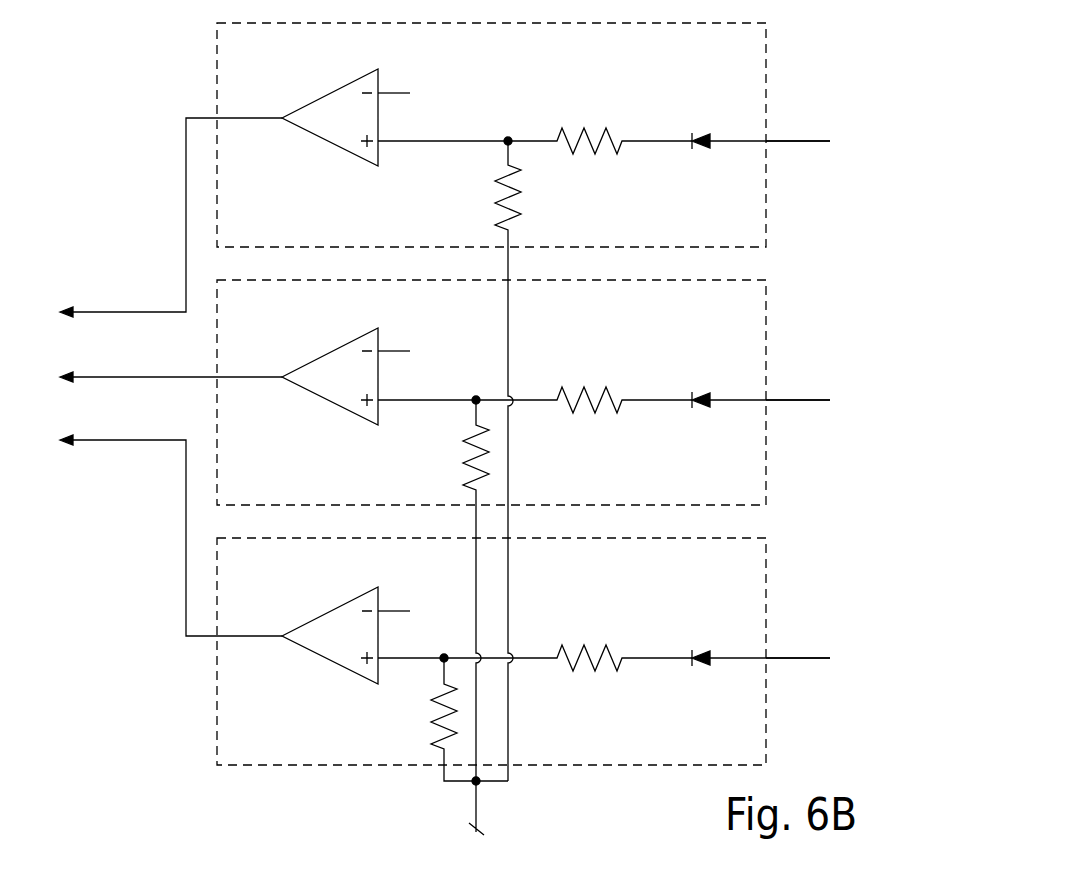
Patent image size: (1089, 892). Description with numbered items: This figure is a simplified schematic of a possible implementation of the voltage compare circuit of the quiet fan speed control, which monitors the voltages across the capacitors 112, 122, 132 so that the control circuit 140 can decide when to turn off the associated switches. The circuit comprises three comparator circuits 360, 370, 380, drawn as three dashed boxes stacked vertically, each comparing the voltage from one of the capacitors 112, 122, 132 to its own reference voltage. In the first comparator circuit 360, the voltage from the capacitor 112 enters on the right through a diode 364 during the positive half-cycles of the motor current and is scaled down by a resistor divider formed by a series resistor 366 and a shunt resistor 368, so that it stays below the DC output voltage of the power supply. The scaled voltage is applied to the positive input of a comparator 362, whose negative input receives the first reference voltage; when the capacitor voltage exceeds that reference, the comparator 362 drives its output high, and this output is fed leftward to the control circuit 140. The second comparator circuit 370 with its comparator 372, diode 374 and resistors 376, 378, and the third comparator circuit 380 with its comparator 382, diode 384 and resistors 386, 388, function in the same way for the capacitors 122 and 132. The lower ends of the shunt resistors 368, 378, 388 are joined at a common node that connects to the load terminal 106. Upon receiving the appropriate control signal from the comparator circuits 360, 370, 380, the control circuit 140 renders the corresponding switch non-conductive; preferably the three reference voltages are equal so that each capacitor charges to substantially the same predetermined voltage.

The first comparator circuit 360 is at (766, 97).
The comparator 362 is at (330, 101).
The diode 364 is at (705, 150).
The resistor 366 is at (600, 128).
The resistor 368 is at (515, 192).
The second comparator circuit 370 is at (766, 340).
The comparator 372 is at (315, 367).
The diode 374 is at (705, 410).
The resistor 376 is at (600, 388).
The resistor 378 is at (470, 450).
The third comparator circuit 380 is at (766, 595).
The comparator 382 is at (330, 617).
The diode 384 is at (705, 667).
The resistor 386 is at (600, 646).
The resistor 388 is at (437, 708).
The control circuit 140 is at (154, 377).
The capacitor 112 is at (887, 143).
The capacitor 122 is at (887, 402).
The capacitor 132 is at (887, 661).
The load terminal 106 is at (475, 820).